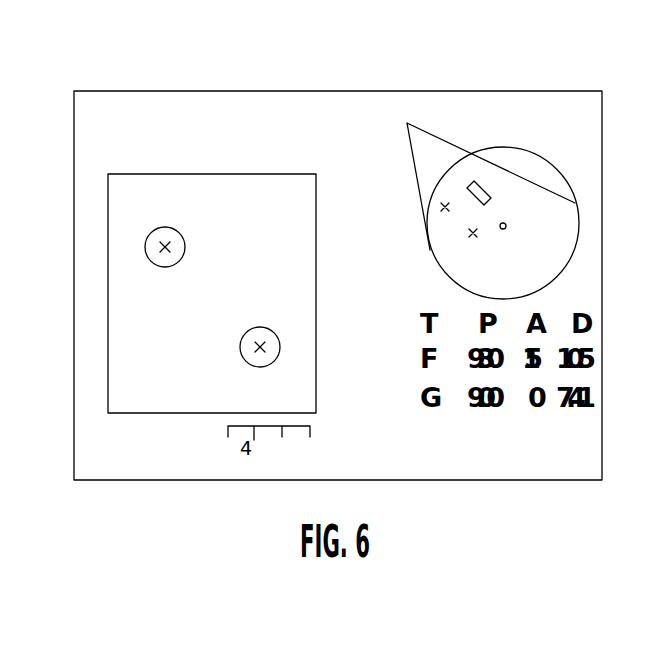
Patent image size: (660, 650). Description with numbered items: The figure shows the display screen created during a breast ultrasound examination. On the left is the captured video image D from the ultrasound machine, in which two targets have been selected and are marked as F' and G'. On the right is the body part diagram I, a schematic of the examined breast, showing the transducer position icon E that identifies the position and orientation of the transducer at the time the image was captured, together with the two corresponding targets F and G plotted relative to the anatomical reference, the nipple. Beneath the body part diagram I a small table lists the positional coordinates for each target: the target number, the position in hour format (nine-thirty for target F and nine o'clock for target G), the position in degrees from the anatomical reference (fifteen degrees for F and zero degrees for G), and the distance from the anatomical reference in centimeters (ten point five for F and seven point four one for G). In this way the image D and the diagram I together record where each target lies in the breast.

The captured video image D is at (142, 188).
The transducer position icon E is at (483, 188).
The first target F is at (405, 184).
The second target G is at (429, 255).
The body part diagram I is at (555, 200).
The first target as selected in image F' is at (105, 240).
The second target as selected in image G' is at (153, 334).